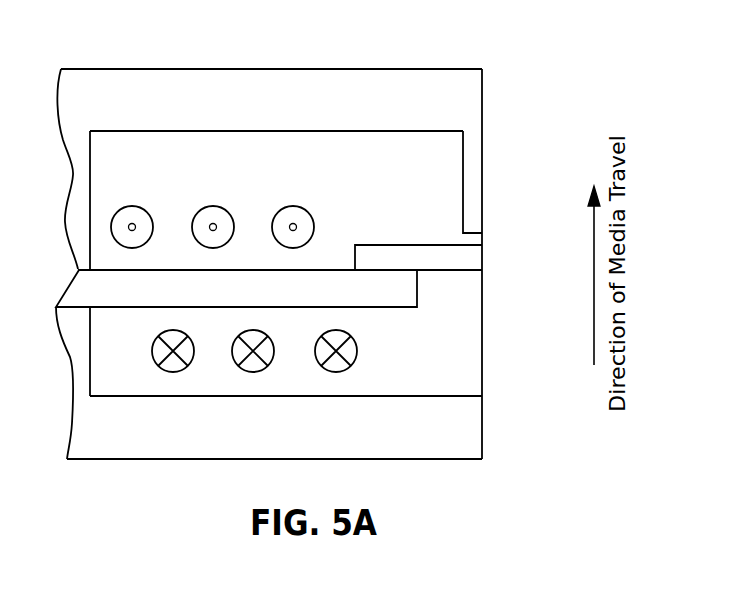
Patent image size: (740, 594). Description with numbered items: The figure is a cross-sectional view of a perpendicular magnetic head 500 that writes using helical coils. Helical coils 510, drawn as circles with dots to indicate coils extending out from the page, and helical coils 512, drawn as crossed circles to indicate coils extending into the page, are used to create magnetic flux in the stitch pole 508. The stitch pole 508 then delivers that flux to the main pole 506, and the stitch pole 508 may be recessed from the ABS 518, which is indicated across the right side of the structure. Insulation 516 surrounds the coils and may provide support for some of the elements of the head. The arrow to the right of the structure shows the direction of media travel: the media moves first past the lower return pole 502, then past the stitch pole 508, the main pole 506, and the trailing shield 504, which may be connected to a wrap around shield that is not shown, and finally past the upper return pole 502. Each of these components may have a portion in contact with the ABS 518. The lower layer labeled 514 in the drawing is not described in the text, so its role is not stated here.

The media transport assembly 500 is at (210, 36).
The first housing wall 502 is at (332, 111).
The first gap 504 is at (483, 186).
The second gap 506 is at (483, 250).
The media guide 508 is at (267, 301).
The emitters 510 is at (131, 207).
The detectors 512 is at (152, 357).
The second housing wall 514 is at (267, 439).
The cavity 516 is at (377, 196).
The housing surfaces 518 is at (496, 91).